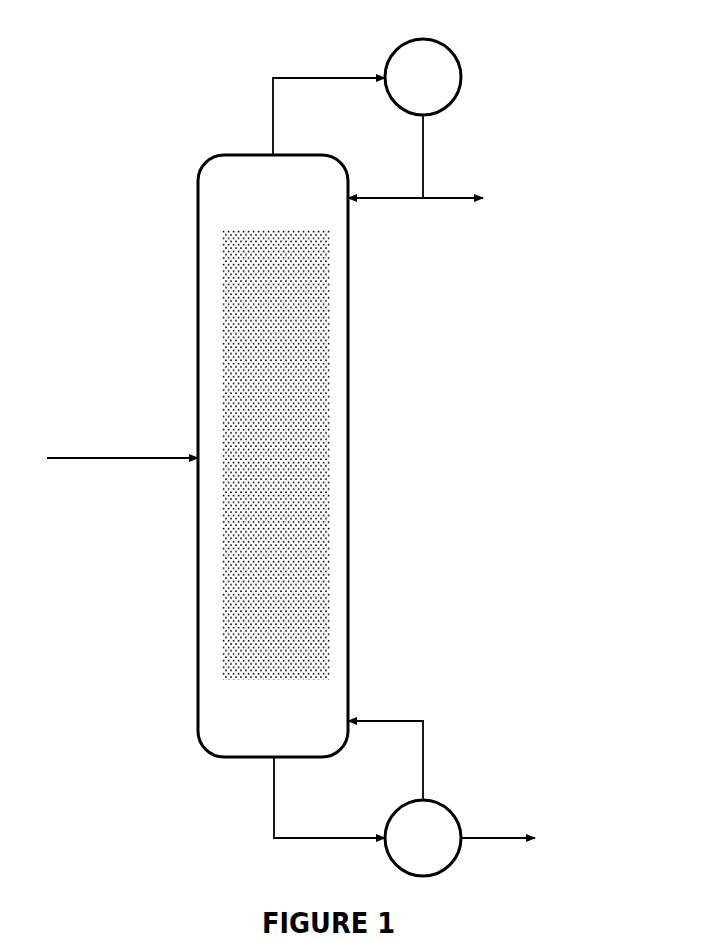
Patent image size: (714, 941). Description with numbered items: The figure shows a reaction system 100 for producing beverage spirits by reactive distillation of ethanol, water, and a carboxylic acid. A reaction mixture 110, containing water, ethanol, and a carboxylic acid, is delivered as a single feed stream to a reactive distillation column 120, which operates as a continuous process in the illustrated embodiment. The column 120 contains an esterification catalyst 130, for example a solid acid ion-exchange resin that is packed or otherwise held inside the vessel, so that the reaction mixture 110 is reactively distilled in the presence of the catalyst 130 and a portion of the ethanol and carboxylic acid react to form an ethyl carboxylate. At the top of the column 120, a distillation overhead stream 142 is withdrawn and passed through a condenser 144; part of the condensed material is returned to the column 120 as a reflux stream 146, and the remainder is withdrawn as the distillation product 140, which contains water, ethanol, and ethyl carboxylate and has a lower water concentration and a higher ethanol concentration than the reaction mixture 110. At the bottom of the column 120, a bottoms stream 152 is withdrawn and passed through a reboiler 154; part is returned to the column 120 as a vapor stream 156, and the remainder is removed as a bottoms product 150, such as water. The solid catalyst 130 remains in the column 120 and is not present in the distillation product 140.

The reaction system 100 is at (137, 128).
The reaction mixture 110 is at (122, 440).
The reactive distillation column 120 is at (197, 272).
The esterification catalyst 130 is at (330, 415).
The distillation product 140 is at (482, 199).
The distillation overhead stream 142 is at (329, 102).
The condenser 144 is at (452, 103).
The reflux stream 146 is at (385, 176).
The bottoms product 150 is at (527, 839).
The bottoms stream 152 is at (329, 797).
The reboiler 154 is at (452, 812).
The vapor stream 156 is at (385, 746).